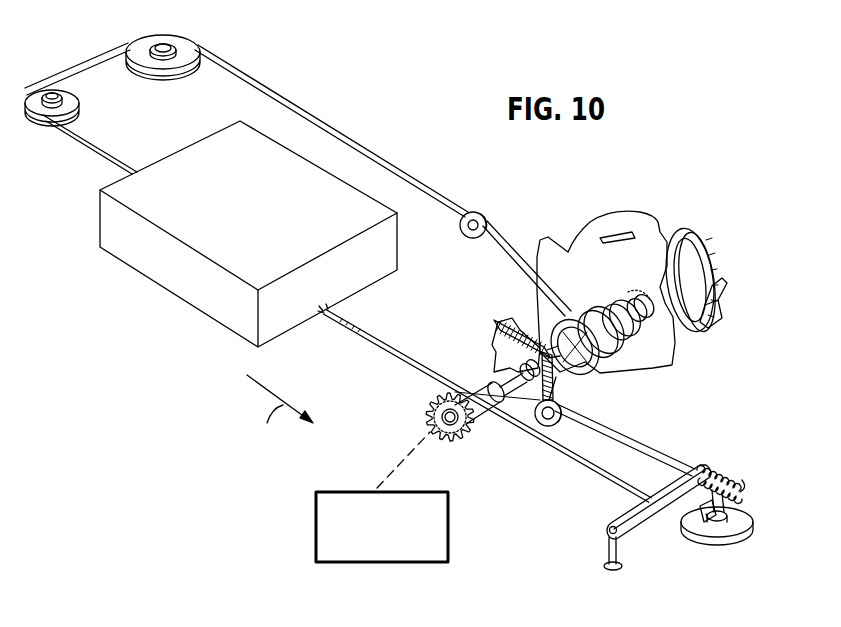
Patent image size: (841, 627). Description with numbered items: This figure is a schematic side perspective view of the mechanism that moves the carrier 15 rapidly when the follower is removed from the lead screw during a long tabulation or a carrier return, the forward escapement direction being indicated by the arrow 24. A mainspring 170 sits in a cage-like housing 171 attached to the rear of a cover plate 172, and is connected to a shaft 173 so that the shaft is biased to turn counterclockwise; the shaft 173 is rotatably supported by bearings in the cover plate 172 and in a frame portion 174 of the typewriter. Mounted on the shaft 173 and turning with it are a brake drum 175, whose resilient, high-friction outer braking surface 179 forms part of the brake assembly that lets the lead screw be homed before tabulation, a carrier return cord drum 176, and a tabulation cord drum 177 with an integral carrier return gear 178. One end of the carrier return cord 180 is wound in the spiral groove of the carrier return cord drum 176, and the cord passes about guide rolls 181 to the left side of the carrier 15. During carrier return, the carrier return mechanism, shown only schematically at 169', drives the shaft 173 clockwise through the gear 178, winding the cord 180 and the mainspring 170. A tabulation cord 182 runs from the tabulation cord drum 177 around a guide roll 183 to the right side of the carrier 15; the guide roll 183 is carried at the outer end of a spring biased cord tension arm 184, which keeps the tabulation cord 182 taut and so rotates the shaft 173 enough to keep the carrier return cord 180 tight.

The carrier 15 is at (380, 272).
The forward escapement direction arrow 24 is at (265, 392).
The carrier return mechanism 169' is at (346, 497).
The mainspring 170 is at (693, 252).
The cage-like housing 171 is at (726, 283).
The cover plate 172 is at (592, 233).
The shaft 173 is at (542, 332).
The frame portion 174 is at (500, 338).
The brake drum 175 is at (627, 346).
The carrier return cord drum 176 is at (598, 372).
The tabulation cord drum 177 is at (463, 383).
The carrier return gear 178 is at (435, 398).
The outer braking surface 179 is at (630, 350).
The carrier return cord 180 is at (349, 134).
The guide rolls 181 is at (188, 45).
The tabulation cord 182 is at (375, 344).
The guide roll 183 is at (740, 508).
The spring biased cord tension arm 184 is at (633, 514).